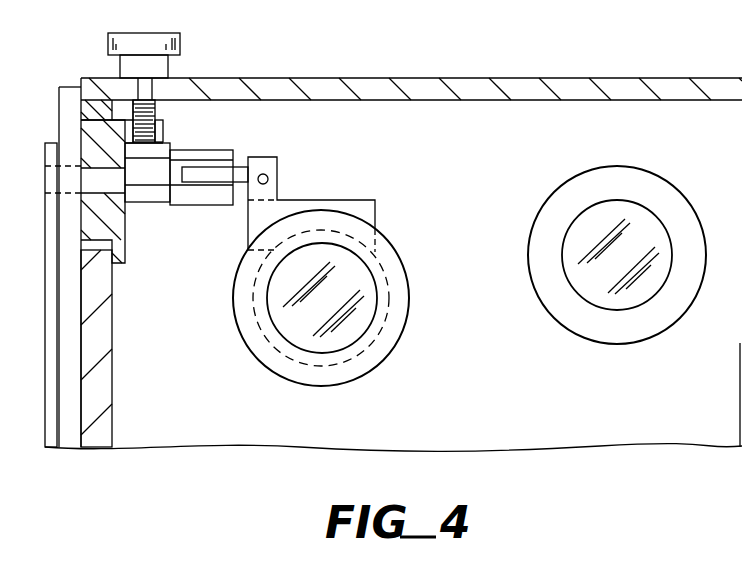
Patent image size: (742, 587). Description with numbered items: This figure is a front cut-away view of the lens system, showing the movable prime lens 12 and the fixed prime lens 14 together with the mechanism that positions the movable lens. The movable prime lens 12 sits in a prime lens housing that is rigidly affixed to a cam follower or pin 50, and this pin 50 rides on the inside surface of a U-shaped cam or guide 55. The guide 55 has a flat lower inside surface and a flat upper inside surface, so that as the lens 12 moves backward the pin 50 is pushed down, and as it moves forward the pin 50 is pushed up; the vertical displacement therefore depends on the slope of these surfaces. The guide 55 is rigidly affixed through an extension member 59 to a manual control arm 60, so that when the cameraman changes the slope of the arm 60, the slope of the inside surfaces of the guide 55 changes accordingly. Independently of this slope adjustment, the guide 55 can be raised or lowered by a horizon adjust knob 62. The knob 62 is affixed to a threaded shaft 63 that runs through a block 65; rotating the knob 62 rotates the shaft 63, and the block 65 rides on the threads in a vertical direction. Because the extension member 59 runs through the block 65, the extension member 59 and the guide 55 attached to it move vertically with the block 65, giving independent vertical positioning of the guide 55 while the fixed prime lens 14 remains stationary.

The movable prime lens 12 is at (348, 328).
The fixed prime lens 14 is at (618, 295).
The cam follower or pin 50 is at (231, 178).
The cam or guide 55 is at (186, 147).
The extension member 59 is at (122, 181).
The manual control arm 60 is at (50, 380).
The horizon adjust knob 62 is at (108, 50).
The threaded shaft 63 is at (143, 98).
The block 65 is at (127, 242).